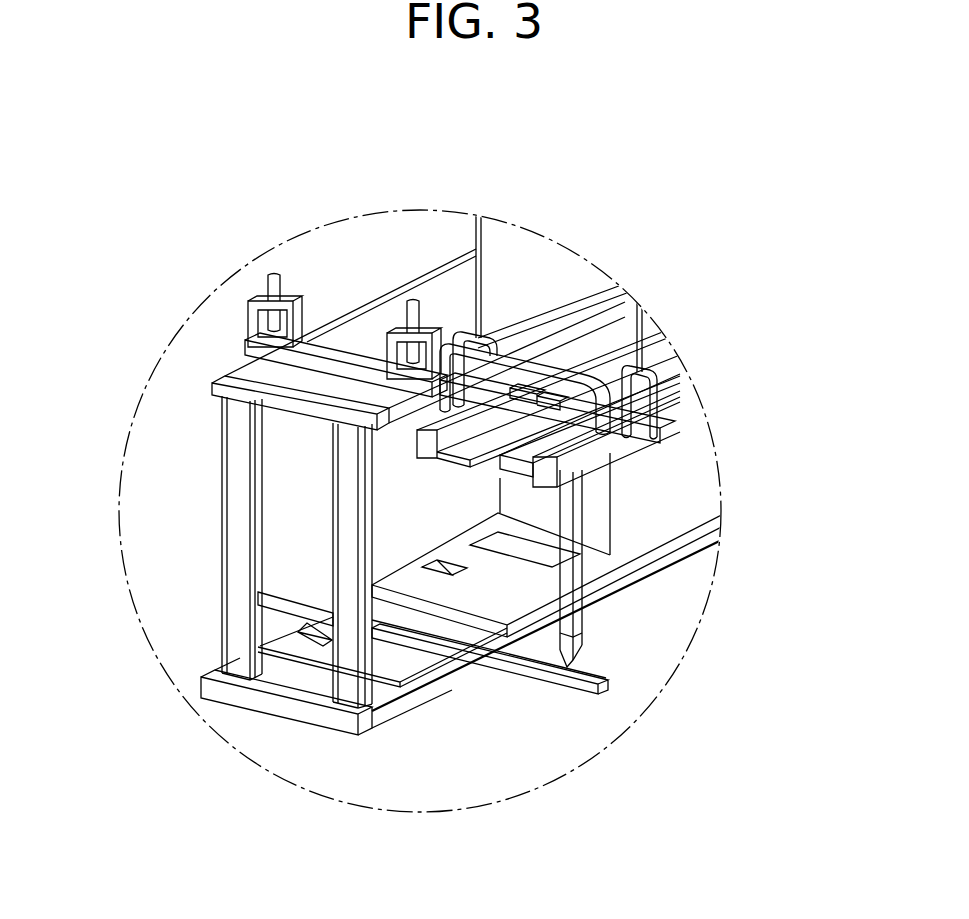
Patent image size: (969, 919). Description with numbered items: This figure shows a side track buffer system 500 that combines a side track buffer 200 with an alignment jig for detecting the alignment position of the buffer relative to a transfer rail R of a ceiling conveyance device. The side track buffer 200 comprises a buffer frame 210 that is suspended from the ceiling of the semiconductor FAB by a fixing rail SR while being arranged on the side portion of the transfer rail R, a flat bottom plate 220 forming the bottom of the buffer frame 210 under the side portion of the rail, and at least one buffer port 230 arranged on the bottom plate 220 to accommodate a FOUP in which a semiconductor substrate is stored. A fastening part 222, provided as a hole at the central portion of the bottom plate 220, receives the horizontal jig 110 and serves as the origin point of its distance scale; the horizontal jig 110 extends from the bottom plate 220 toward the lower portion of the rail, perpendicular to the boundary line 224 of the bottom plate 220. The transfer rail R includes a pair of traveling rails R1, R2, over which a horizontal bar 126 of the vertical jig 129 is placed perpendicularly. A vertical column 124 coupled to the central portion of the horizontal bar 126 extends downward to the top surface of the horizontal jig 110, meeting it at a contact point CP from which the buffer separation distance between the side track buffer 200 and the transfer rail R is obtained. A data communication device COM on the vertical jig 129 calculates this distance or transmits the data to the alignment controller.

The side track buffer system 500 is at (463, 144).
The side track buffer 200 is at (204, 385).
The buffer frame 210 is at (230, 629).
The bottom plate 220 is at (413, 682).
The fastening part 222 is at (308, 637).
The boundary line 224 is at (447, 678).
The buffer port 230 is at (537, 600).
The transfer rail R is at (68, 447).
The traveling rail R1 is at (418, 442).
The traveling rail R2 is at (527, 466).
The fixing rail SR is at (250, 322).
The data communication device COM is at (553, 395).
The vertical jig 129 is at (796, 457).
The horizontal bar 126 is at (642, 412).
The vertical column 124 is at (586, 580).
The contact point CP is at (569, 666).
The horizontal jig 110 is at (606, 692).